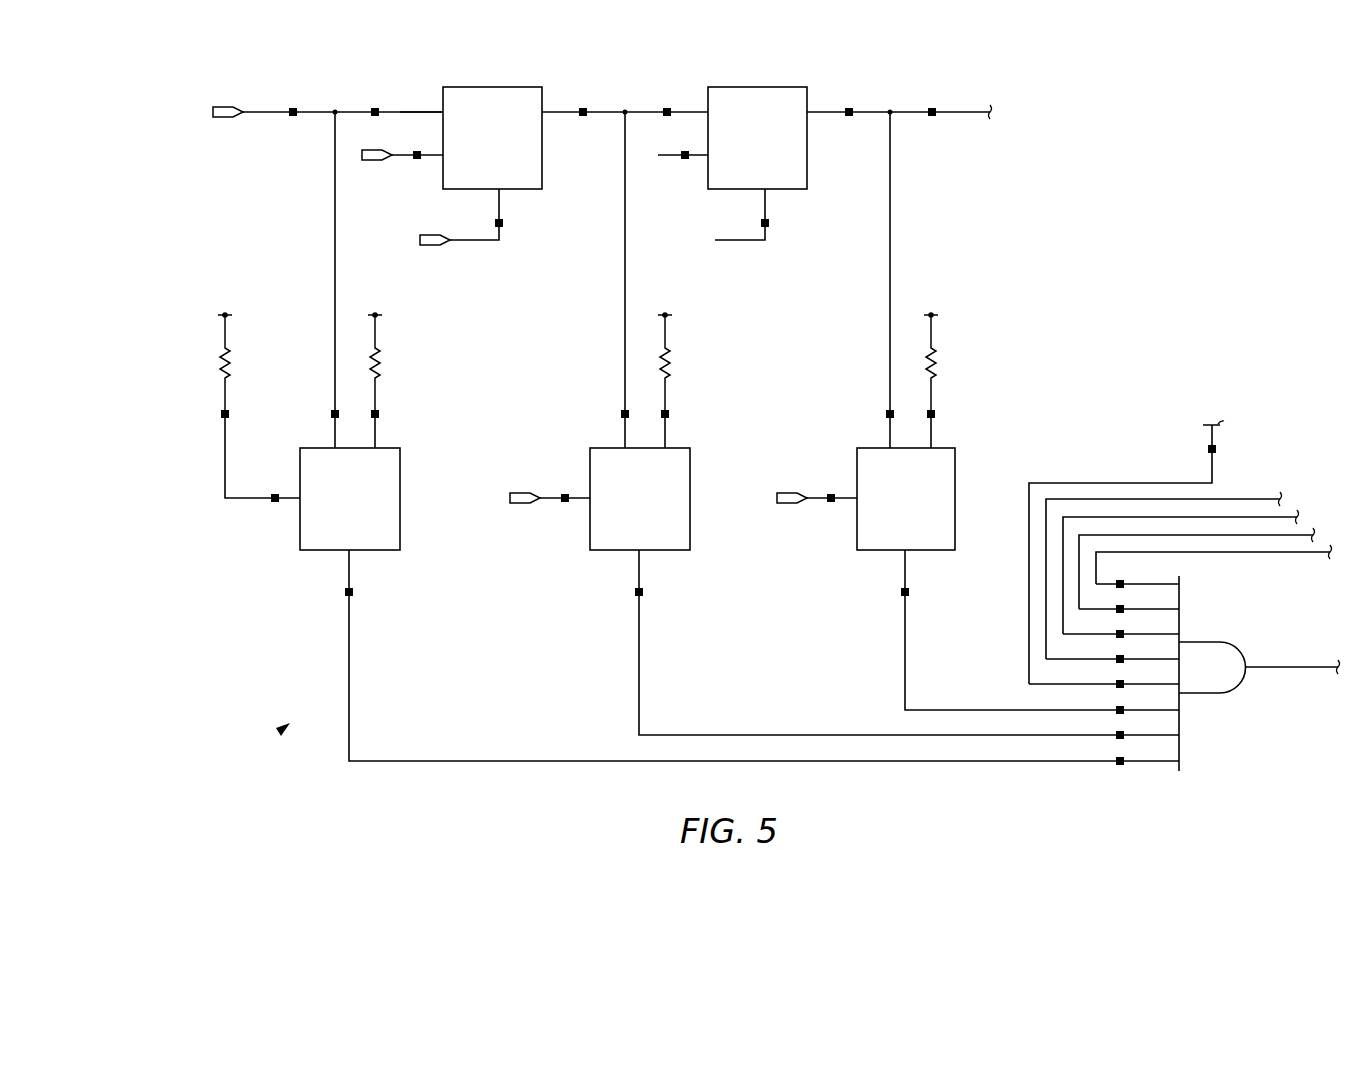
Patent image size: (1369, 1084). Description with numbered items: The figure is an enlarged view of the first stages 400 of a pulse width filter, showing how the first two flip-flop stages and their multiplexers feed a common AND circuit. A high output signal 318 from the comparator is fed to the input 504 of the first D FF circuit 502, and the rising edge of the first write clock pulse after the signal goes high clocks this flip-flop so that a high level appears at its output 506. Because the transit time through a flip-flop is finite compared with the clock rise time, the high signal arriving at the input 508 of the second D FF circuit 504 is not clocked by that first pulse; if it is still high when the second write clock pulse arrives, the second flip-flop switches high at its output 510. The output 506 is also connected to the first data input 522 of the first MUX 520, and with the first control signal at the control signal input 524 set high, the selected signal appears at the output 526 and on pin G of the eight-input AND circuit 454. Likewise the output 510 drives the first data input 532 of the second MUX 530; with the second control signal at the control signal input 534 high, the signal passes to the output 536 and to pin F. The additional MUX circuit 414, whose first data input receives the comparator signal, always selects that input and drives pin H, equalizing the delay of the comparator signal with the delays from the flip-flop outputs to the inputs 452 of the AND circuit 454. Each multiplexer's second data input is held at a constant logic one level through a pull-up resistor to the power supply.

The output signal of the comparator 318 is at (262, 135).
The first stages of the pulse width filter 400 is at (283, 729).
The additional 2 to 1 MUX circuit 414 is at (310, 552).
The inputs of the AND circuit 452 is at (1165, 768).
The AND circuit 454 is at (1240, 646).
The first D FF circuit 502 is at (490, 87).
The input of the first D FF circuit / second D FF circuit 504 is at (430, 110).
The output of the first D FF circuit 506 is at (553, 110).
The input of the second D FF circuit 508 is at (697, 110).
The output of the second D FF circuit 510 is at (814, 110).
The first MUX 520 is at (605, 552).
The IN1 input of the first MUX 522 is at (624, 433).
The control signal input of the first MUX 524 is at (550, 503).
The output of the first MUX 526 is at (641, 567).
The second MUX 530 is at (873, 552).
The IN1 input of the second MUX 532 is at (889, 433).
The control signal input of the second MUX 534 is at (815, 503).
The output of the second MUX 536 is at (907, 567).